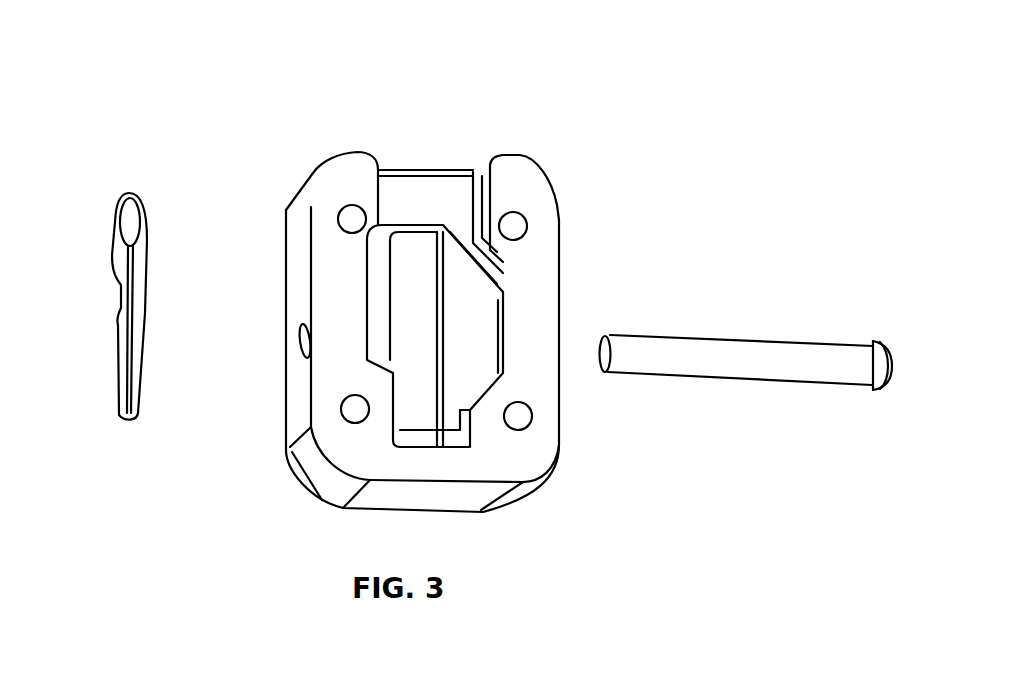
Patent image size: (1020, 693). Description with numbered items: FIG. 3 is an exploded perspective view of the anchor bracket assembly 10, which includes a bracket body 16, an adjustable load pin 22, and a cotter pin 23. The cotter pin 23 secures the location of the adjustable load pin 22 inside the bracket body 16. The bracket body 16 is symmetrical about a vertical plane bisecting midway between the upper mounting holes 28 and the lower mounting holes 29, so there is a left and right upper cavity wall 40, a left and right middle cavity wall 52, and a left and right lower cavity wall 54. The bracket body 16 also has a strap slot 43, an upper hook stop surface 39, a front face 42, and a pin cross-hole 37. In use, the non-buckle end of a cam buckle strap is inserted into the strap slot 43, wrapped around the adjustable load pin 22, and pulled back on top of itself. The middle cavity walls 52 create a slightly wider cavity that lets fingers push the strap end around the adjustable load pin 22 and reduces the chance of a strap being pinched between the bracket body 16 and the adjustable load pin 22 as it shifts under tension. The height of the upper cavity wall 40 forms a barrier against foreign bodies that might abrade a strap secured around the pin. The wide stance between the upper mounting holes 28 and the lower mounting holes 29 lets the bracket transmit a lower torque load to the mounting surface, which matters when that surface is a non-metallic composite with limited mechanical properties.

The anchor bracket assembly 10 is at (475, 62).
The bracket body 16 is at (523, 177).
The adjustable load pin 22 is at (700, 350).
The cotter pin 23 is at (118, 216).
The upper mounting hole 28 is at (340, 217).
The lower mounting hole 29 is at (341, 407).
The pin cross-hole 37 is at (300, 350).
The upper hook stop surface 39 is at (411, 226).
The upper cavity wall 40 is at (478, 208).
The front face 42 is at (352, 294).
The strap slot 43 is at (418, 158).
The middle cavity wall 52 is at (489, 300).
The lower cavity wall 54 is at (472, 419).